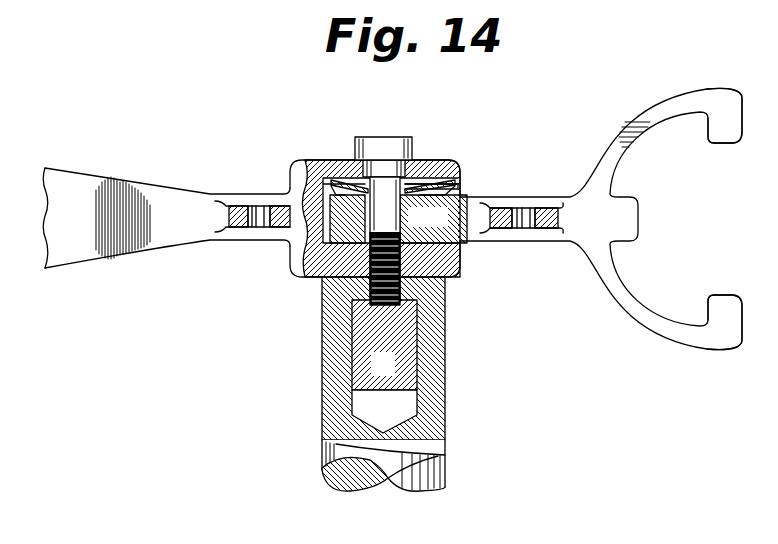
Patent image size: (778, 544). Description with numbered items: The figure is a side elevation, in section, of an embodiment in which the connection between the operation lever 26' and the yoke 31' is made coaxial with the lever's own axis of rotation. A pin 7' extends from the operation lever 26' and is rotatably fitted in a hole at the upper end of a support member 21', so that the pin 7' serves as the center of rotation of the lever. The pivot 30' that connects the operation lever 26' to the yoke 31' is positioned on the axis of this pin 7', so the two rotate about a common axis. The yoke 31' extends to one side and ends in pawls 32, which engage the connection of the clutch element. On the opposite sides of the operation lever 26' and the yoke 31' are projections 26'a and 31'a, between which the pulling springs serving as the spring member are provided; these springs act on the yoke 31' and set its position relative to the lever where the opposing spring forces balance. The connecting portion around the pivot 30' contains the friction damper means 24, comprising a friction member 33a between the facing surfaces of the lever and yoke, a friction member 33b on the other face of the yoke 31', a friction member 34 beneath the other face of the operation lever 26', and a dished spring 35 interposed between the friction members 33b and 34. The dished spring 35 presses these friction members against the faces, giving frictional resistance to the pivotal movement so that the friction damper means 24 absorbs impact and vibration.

The pin 7' is at (383, 336).
The support member 21' is at (359, 465).
The friction damper means 24 is at (458, 188).
The operation lever 26' is at (166, 231).
The projection 26'a is at (252, 239).
The pivot 30' is at (383, 206).
The yoke 31' is at (601, 220).
The projection 31'a is at (526, 200).
The pawls 32 is at (714, 143).
The friction member 33a is at (398, 219).
The friction member 33b is at (291, 180).
The friction member 34 is at (356, 184).
The dished spring 35 is at (416, 184).